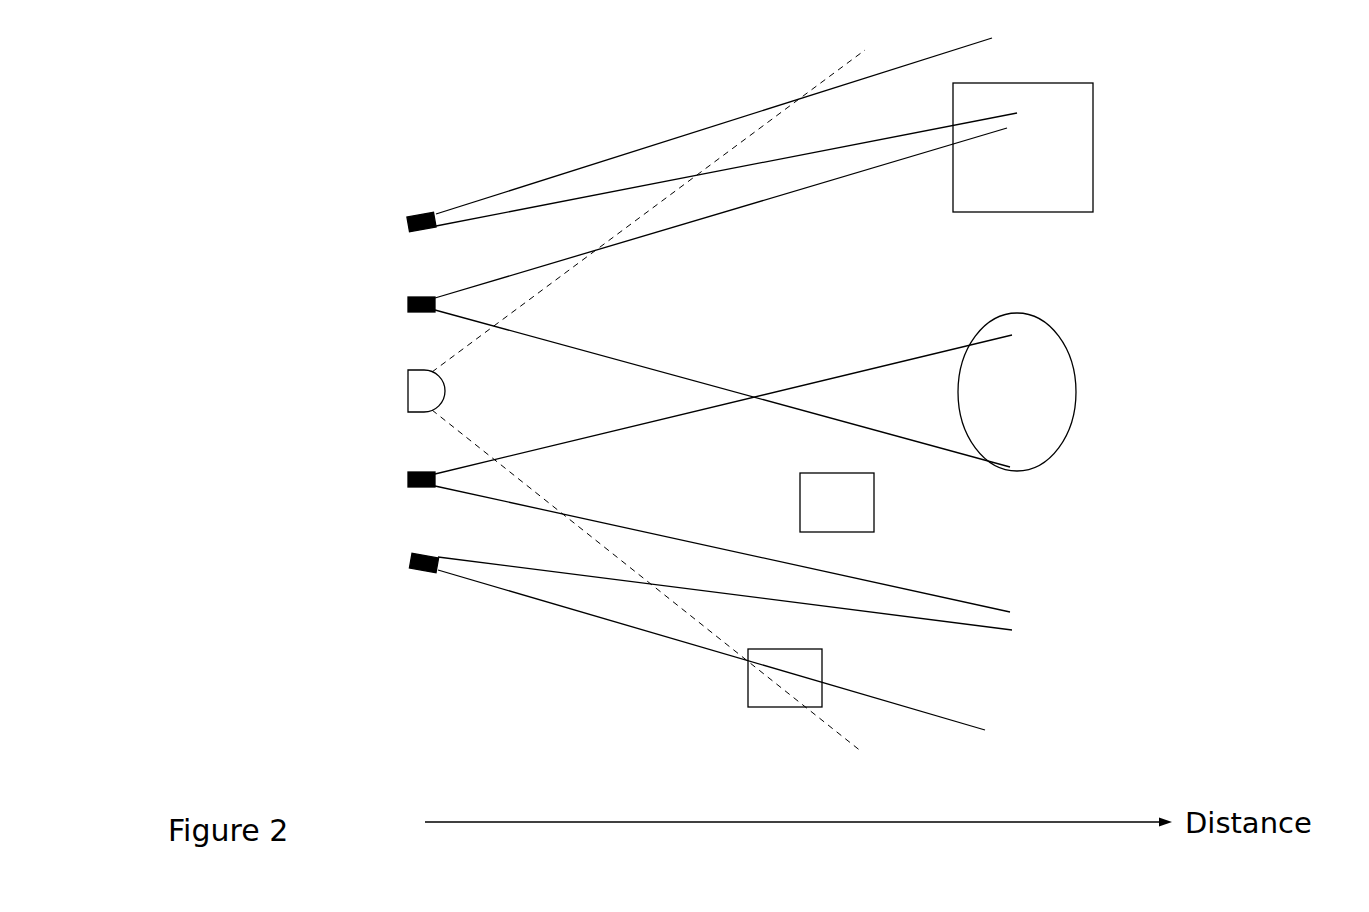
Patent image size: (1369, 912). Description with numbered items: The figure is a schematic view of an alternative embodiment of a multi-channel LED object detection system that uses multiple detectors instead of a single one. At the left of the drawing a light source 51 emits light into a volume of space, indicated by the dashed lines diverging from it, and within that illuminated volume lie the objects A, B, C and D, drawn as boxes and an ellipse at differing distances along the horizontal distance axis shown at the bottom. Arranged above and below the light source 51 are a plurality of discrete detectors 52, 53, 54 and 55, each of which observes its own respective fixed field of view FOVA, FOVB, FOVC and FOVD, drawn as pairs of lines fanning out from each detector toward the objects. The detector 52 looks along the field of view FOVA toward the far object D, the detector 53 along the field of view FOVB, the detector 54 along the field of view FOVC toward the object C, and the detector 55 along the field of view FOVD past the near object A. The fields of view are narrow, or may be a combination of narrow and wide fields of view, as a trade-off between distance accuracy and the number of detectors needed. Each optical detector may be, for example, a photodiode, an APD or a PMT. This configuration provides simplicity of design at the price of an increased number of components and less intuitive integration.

The light source 51 is at (408, 392).
The discrete detector 52 is at (410, 220).
The discrete detector 53 is at (410, 302).
The discrete detector 54 is at (408, 478).
The discrete detector 55 is at (410, 561).
The object A is at (748, 695).
The object B is at (874, 518).
The object C is at (1073, 420).
The object D is at (1093, 166).
The fixed field of view FOVA is at (690, 130).
The fixed field of view FOVB is at (630, 240).
The fixed field of view FOVC is at (630, 428).
The fixed field of view FOVD is at (640, 632).